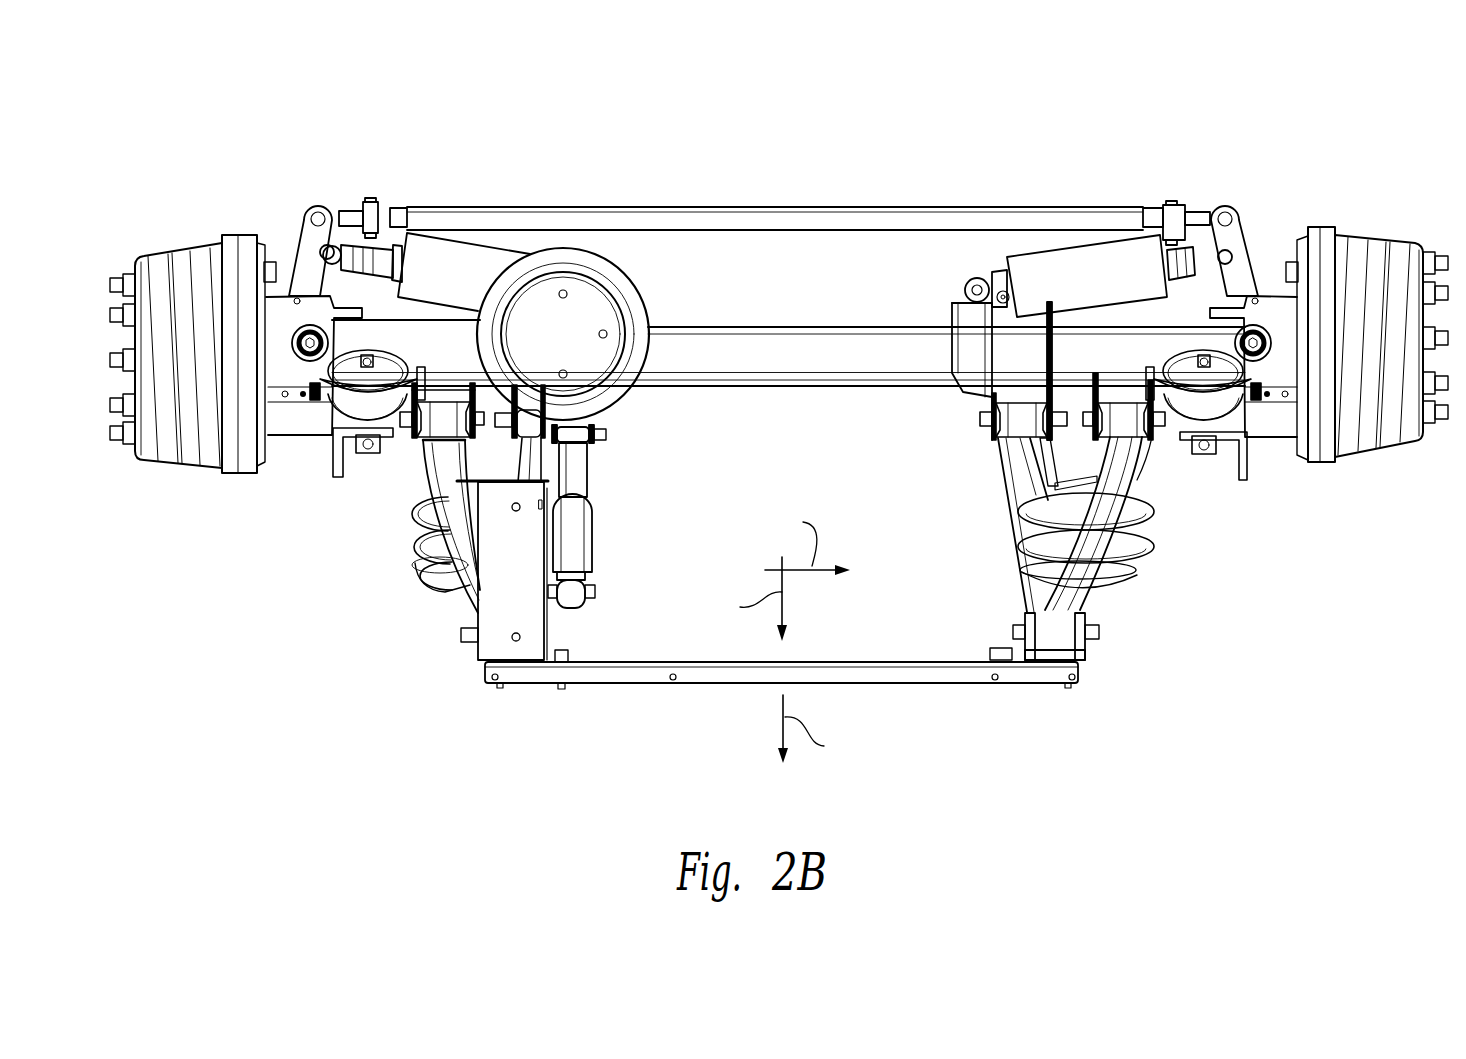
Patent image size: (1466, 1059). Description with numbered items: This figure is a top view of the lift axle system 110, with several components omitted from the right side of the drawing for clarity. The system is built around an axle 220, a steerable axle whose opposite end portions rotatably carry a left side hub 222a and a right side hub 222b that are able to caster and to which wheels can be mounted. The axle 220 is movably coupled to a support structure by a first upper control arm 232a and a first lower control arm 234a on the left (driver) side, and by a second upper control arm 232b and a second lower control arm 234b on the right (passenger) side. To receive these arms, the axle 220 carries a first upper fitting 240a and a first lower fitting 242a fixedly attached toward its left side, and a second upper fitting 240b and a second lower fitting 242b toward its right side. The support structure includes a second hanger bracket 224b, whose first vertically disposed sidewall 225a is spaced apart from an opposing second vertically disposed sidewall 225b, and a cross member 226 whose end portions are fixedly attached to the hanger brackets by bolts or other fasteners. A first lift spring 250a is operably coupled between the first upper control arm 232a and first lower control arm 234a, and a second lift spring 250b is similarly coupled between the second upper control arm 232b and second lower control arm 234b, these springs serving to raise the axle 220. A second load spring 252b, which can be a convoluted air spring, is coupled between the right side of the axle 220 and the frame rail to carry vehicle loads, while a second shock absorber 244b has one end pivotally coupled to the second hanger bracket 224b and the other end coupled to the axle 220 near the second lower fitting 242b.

The lift axle system 110 is at (598, 78).
The axle 220 is at (745, 327).
The left side hub 222a is at (1360, 230).
The right side hub 222b is at (180, 240).
The second hanger bracket 224b is at (480, 608).
The first vertically disposed sidewall 225a is at (1085, 617).
The second vertically disposed sidewall 225b is at (1025, 607).
The cross member 226 is at (862, 677).
The first upper control arm 232a is at (1137, 567).
The second upper control arm 232b is at (470, 440).
The first lower control arm 234a is at (998, 483).
The second lower control arm 234b is at (588, 478).
The first upper fitting 240a is at (1148, 440).
The second upper fitting 240b is at (415, 428).
The first lower fitting 242a is at (985, 398).
The second lower fitting 242b is at (447, 498).
The second shock absorber 244b is at (590, 548).
The first lift spring 250a is at (1137, 572).
The second lift spring 250b is at (420, 557).
The second load spring 252b is at (643, 287).